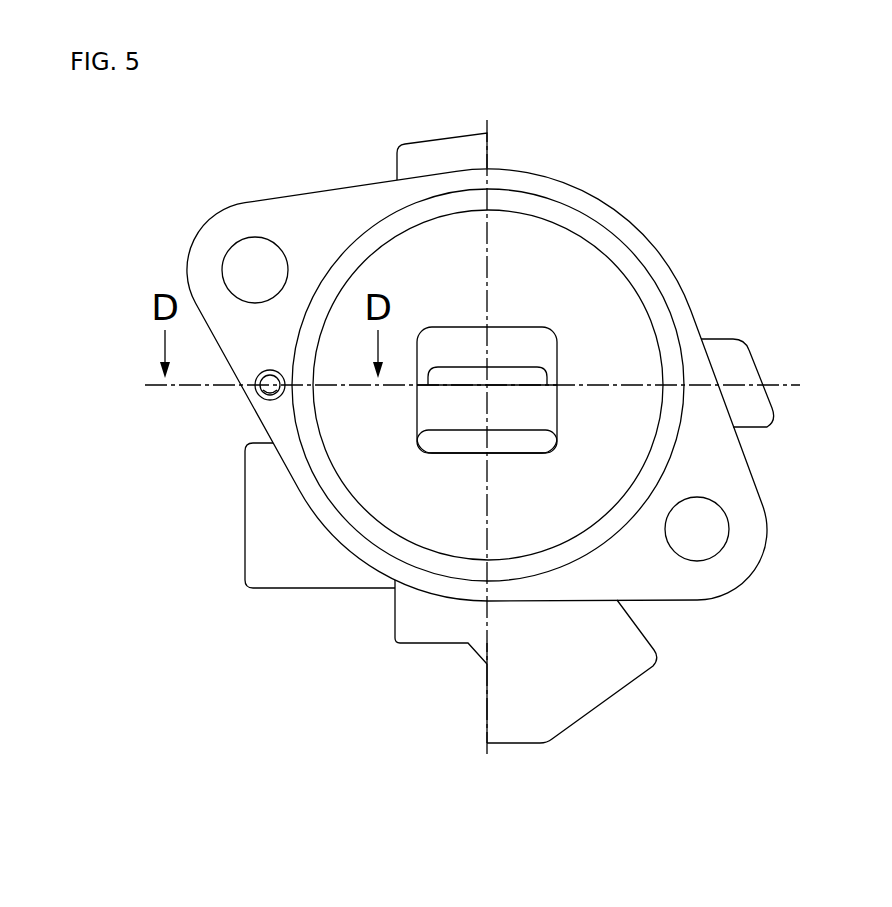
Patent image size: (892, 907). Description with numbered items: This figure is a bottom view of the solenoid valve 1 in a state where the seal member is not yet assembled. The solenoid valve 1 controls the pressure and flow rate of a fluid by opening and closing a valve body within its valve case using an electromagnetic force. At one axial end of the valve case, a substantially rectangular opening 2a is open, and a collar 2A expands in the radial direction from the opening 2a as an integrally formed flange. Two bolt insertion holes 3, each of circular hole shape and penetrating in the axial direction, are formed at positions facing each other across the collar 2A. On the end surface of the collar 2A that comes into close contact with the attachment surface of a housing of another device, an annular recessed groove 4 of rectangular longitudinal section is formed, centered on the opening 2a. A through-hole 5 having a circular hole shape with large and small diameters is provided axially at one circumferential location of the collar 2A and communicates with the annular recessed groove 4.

The solenoid valve 1 is at (345, 151).
The collar 2A is at (686, 298).
The opening 2a is at (514, 328).
The bolt insertion hole 3 is at (250, 238).
The annular recessed groove 4 is at (602, 230).
The through-hole 5 is at (262, 397).